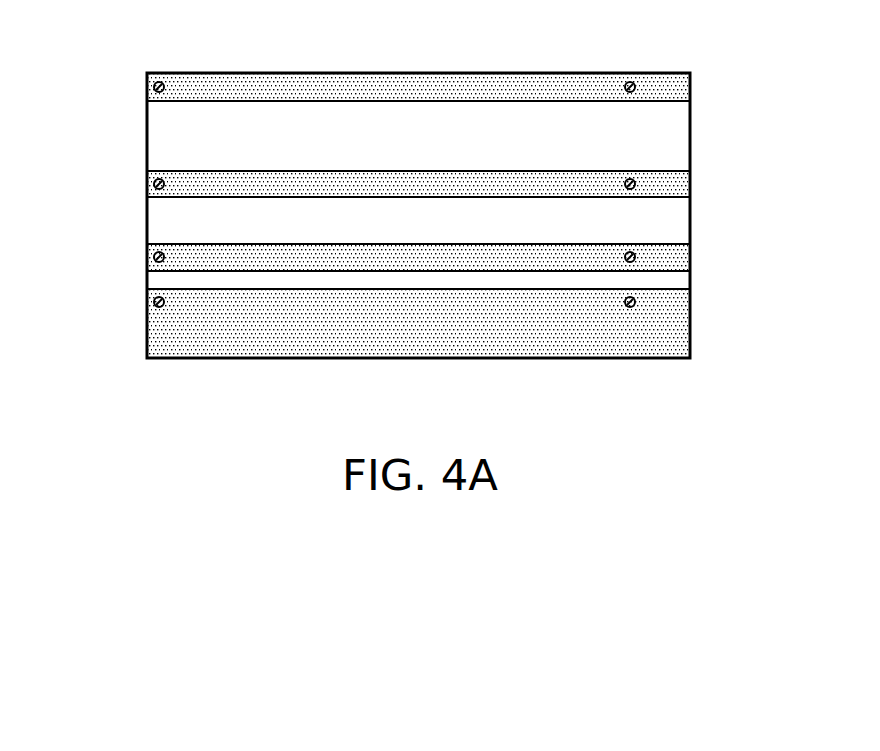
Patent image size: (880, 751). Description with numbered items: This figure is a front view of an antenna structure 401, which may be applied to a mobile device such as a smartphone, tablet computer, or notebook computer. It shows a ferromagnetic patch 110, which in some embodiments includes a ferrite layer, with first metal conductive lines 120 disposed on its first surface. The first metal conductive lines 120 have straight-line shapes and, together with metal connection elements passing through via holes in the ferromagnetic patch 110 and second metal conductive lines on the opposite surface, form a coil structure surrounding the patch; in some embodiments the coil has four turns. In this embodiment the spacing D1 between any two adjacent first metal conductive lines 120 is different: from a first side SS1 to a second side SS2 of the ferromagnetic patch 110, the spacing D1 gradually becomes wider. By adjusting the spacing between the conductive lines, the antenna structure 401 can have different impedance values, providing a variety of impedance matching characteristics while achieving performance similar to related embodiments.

The antenna structure 401 is at (109, 62).
The ferromagnetic patch 110 is at (690, 135).
The first metal conductive lines 120 is at (680, 88).
The spacing D1 is at (147, 102).
The first side SS1 is at (419, 360).
The second side SS2 is at (416, 73).